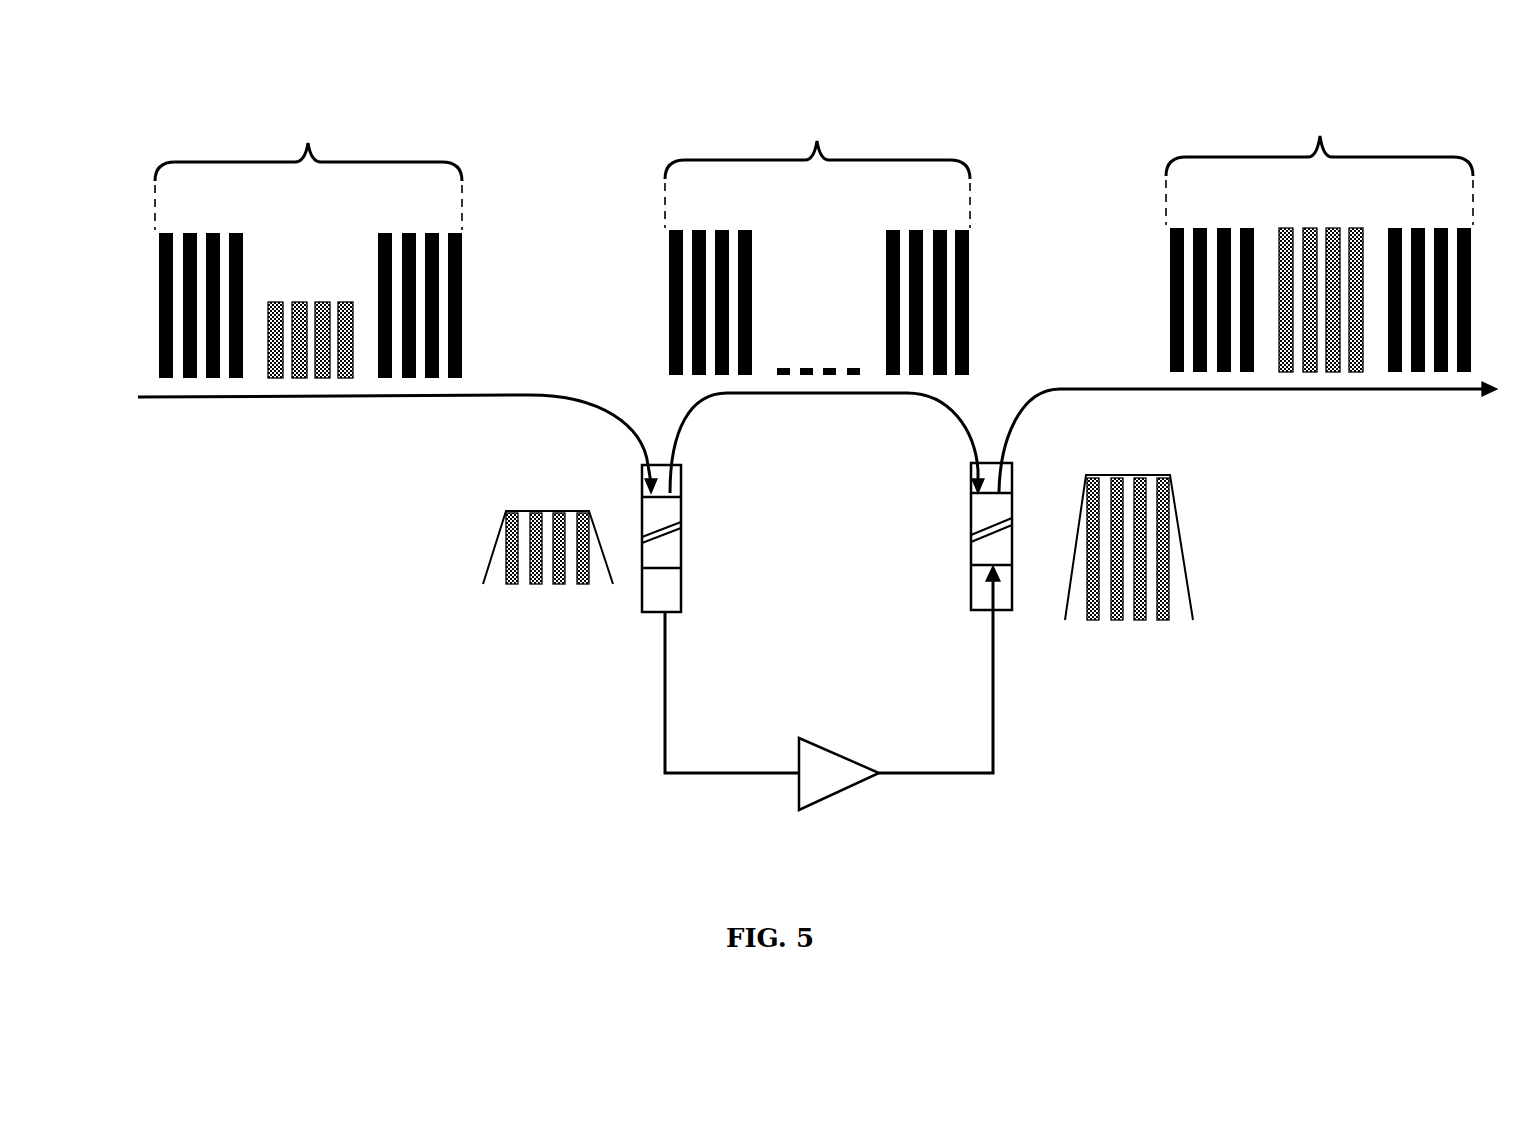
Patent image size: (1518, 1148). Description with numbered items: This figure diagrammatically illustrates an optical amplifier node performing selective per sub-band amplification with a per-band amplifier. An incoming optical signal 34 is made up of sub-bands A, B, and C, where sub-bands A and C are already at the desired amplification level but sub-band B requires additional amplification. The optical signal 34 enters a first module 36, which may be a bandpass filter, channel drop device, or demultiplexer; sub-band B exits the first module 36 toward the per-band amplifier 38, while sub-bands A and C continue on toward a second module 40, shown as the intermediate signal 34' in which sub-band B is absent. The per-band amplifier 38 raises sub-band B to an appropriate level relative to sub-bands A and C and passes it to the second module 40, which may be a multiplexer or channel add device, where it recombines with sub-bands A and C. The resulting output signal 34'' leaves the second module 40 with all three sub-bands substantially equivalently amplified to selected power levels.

The optical signal 34 is at (308, 243).
The intermediate optical signal spectrum with channel B dropped 34' is at (817, 240).
The output optical signal spectrum with channel B added 34'' is at (1319, 238).
The first module 36 is at (665, 550).
The per-band amplifier 38 is at (827, 780).
The second module 40 is at (990, 510).